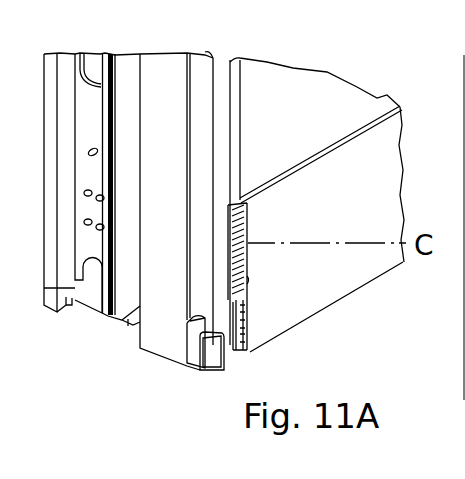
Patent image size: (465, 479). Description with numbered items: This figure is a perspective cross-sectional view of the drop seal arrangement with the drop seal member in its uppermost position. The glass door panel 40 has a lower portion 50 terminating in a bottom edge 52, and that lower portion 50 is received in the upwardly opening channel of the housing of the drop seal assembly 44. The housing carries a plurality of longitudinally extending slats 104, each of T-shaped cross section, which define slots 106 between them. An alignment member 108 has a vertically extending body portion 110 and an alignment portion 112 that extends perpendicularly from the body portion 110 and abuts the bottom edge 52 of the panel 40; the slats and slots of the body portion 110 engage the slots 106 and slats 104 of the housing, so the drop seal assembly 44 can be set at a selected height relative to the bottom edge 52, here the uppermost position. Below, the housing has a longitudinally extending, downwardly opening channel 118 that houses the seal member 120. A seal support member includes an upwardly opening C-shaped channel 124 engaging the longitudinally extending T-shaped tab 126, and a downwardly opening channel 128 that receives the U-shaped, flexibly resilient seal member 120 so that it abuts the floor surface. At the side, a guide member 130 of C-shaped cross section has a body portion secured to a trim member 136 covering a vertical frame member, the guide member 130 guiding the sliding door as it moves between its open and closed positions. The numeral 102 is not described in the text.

The glass door panel 40 is at (296, 62).
The drop seal assembly 44 is at (417, 170).
The lower portion 50 is at (234, 164).
The latch assembly 102 is at (226, 211).
The alignment member 108 is at (238, 222).
The body portion 110 is at (238, 226).
The alignment portion 112 is at (240, 229).
The bottom edge 52 is at (236, 236).
The T-shaped tab 126 is at (240, 300).
The slots 106 is at (248, 280).
The slats 104 is at (243, 290).
The C-shaped channel 124 is at (246, 313).
The downwardly opening channel 118 is at (245, 324).
The downwardly opening channel 128 is at (243, 336).
The seal member 120 is at (246, 345).
The trim member 136 is at (140, 352).
The guide members 130 is at (185, 372).